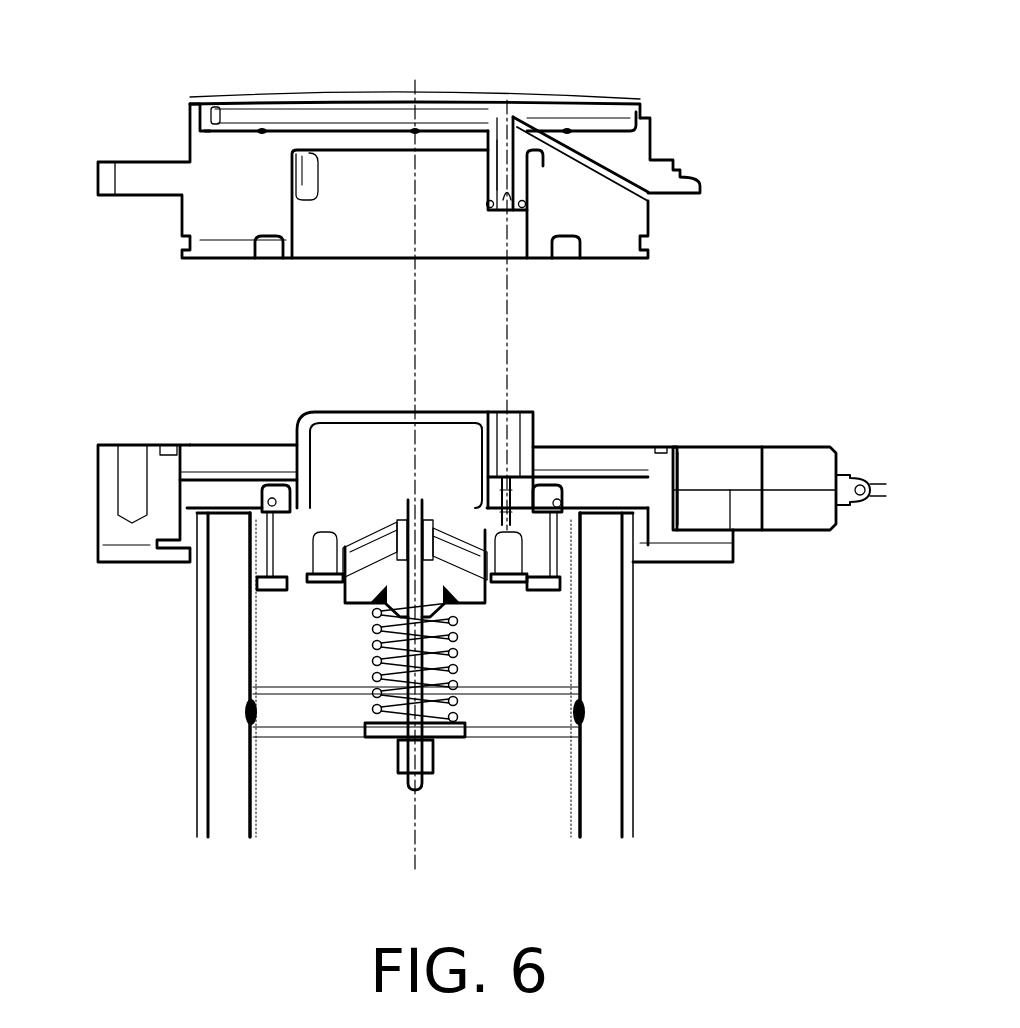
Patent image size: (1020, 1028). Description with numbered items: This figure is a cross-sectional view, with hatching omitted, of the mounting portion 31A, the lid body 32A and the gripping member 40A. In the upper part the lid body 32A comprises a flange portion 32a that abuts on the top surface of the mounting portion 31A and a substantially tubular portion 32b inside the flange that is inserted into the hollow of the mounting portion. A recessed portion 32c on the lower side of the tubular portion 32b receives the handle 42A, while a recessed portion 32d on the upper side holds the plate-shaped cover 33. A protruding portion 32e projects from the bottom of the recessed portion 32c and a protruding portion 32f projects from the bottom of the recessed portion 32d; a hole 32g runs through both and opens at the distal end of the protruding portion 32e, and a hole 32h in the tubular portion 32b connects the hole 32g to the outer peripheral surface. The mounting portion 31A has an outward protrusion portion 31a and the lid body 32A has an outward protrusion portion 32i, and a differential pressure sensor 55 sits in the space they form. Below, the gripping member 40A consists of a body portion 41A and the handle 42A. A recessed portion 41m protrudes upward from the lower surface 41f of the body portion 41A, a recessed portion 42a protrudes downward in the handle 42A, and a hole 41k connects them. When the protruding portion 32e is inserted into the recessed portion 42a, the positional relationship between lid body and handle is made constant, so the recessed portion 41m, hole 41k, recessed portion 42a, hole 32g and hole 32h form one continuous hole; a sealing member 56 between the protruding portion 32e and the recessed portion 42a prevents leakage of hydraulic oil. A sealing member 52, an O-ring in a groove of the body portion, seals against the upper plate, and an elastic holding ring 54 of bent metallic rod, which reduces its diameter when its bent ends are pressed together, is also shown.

The mounting portion 31A is at (107, 445).
The protrusion portion 31a is at (733, 562).
The lid body 32A is at (186, 102).
The flange portion 32a is at (162, 178).
The tubular portion 32b is at (235, 185).
The recessed portion 32c is at (313, 160).
The recessed portion 32d is at (214, 104).
The protruding portion 32e is at (487, 208).
The protruding portion 32f is at (533, 104).
The hole 32g is at (518, 208).
The hole 32h is at (589, 162).
The protrusion portion 32i is at (682, 184).
The cover 33 is at (598, 101).
The gripping member 40A is at (258, 330).
The body portion 41A is at (310, 522).
The lower surface 41f is at (560, 608).
The hole 41k is at (512, 505).
The recessed portion 41m is at (530, 596).
The handle 42A is at (323, 412).
The recessed portion 42a is at (517, 430).
The sealing member 52 is at (270, 575).
The holding ring 54 is at (268, 508).
The differential pressure sensor 55 is at (748, 462).
The sealing member 56 is at (533, 207).